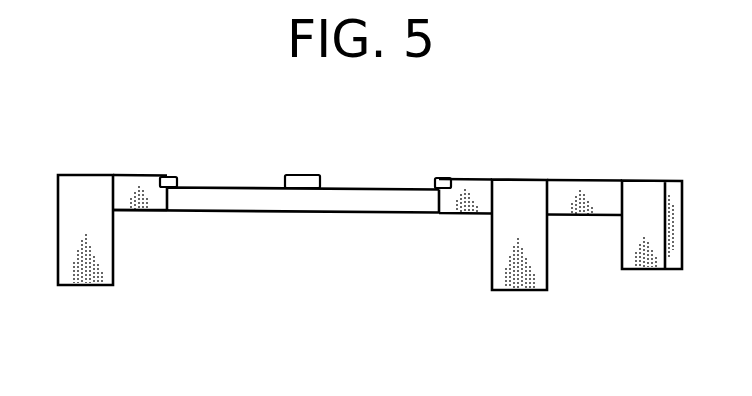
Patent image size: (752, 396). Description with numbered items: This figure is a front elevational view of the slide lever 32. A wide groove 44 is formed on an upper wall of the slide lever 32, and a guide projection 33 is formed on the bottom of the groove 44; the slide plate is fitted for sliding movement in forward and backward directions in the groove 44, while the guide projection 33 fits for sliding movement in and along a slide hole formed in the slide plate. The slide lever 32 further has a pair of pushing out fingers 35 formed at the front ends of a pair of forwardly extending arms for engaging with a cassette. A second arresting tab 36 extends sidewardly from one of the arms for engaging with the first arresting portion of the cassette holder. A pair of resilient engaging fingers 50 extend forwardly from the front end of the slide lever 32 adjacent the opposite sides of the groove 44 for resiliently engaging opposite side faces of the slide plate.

The slide lever 32 is at (160, 212).
The guide projection 33 is at (300, 175).
The pushing out fingers 35 is at (113, 260).
The second arresting tab 36 is at (660, 270).
The wide groove 44 is at (230, 187).
The resilient engaging fingers 50 is at (168, 176).